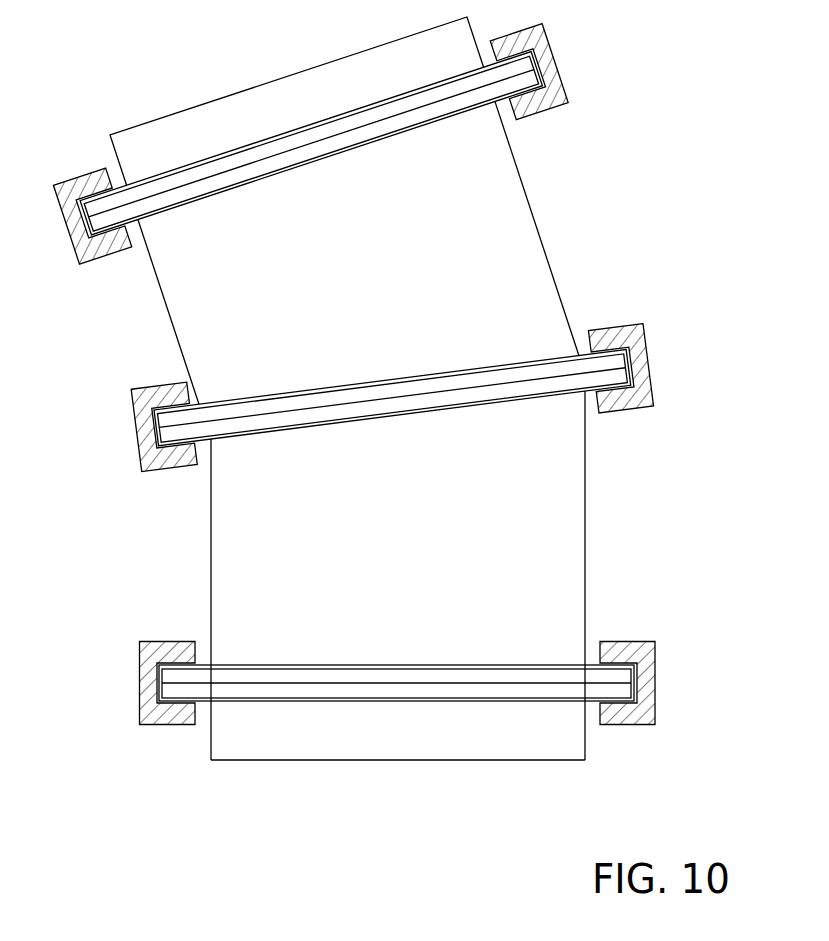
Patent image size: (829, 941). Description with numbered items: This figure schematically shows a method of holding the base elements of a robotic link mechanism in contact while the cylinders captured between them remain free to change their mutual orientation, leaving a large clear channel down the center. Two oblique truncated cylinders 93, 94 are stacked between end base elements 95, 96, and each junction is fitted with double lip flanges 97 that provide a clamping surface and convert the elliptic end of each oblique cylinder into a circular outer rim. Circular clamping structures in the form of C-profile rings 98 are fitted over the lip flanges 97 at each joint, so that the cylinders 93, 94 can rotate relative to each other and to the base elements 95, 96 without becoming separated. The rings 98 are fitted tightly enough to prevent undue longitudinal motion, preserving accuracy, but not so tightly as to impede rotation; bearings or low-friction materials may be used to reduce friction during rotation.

The oblique truncated cylinder 93 is at (585, 537).
The oblique truncated cylinder 94 is at (540, 236).
The end base element 95 is at (462, 760).
The end base element 96 is at (227, 97).
The lip flange 97 is at (347, 152).
The C-profile ring 98 is at (560, 60).